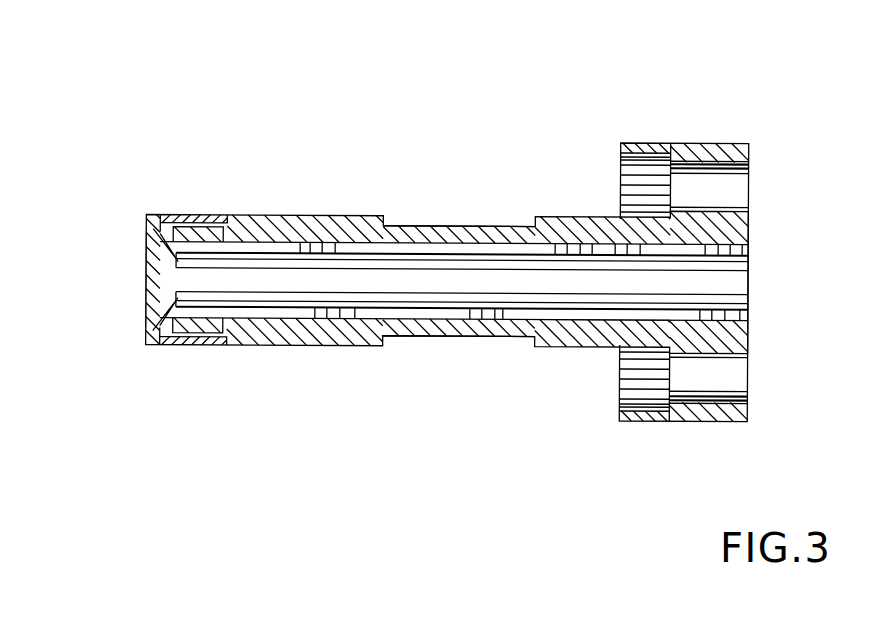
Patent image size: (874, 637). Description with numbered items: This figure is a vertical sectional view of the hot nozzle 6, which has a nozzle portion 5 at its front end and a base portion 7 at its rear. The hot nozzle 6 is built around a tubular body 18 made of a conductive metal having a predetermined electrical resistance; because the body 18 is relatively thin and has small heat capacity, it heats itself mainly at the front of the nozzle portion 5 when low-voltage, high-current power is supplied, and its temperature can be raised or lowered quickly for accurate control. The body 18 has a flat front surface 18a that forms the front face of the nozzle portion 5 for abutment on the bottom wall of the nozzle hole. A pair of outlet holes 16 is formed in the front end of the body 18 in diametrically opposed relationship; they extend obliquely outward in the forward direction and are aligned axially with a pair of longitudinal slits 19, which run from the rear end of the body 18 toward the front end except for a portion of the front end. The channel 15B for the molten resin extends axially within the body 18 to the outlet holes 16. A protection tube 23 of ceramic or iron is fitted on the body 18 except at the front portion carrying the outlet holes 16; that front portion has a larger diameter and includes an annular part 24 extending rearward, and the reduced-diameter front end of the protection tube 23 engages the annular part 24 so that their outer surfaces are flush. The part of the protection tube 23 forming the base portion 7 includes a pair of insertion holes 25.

The nozzle portion 5 is at (287, 348).
The hot nozzle 6 is at (462, 190).
The base portion 7 is at (713, 140).
The channel 15B is at (438, 268).
The outlet holes 16 is at (155, 241).
The tubular body 18 is at (234, 228).
The flat front surface 18a is at (143, 285).
The longitudinal slits 19 is at (504, 256).
The protection tube 23 is at (599, 338).
The annular part 24 is at (200, 216).
The insertion holes 25 is at (708, 186).